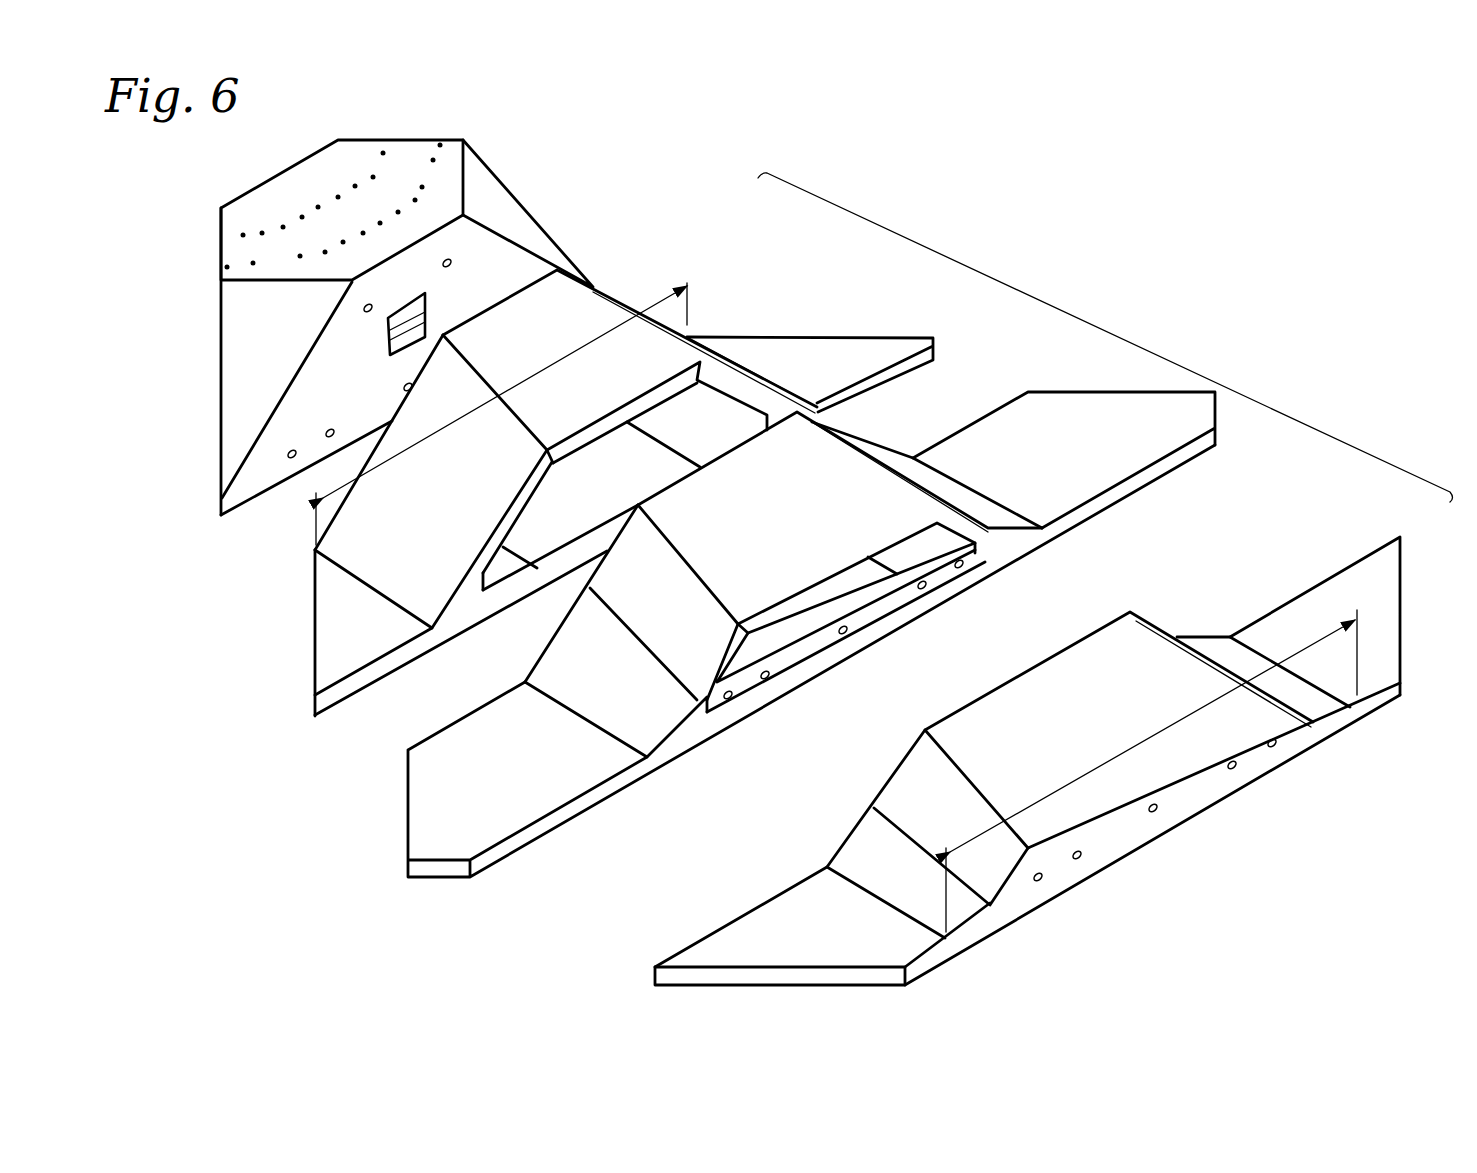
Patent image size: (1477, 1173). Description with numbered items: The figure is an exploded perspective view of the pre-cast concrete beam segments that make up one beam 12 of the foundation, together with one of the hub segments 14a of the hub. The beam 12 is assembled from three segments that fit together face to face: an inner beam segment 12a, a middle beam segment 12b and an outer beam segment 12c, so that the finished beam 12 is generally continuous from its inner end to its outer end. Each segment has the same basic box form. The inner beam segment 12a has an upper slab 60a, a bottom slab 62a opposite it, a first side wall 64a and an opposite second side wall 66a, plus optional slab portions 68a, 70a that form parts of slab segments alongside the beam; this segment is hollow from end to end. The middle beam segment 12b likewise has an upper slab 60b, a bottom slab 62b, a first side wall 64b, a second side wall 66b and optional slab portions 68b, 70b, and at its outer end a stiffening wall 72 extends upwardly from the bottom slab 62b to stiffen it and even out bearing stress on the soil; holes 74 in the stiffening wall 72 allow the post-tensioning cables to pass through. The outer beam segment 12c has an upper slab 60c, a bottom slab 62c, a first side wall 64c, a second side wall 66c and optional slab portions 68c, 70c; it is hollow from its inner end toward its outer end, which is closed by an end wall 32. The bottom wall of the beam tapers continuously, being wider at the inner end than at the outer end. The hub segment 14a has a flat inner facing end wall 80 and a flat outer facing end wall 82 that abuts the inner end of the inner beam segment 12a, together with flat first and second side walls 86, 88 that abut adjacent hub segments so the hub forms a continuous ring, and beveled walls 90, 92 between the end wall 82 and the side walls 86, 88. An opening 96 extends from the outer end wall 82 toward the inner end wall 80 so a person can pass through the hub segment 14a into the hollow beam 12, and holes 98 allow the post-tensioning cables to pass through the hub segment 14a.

The concrete beam 12 is at (1103, 327).
The inner beam segment 12a is at (728, 280).
The middle beam segment 12b is at (991, 388).
The outer beam segment 12c is at (1300, 542).
The hub segment 14a is at (352, 124).
The end wall 32 is at (1200, 787).
The upper slab of inner beam segment 60a is at (588, 300).
The upper slab of middle beam segment 60b is at (840, 473).
The upper slab of outer beam segment 60c is at (1097, 663).
The bottom slab of inner beam segment 62a is at (565, 568).
The bottom slab of middle beam segment 62b is at (810, 662).
The bottom slab of outer beam segment 62c is at (1112, 863).
The first side wall of inner beam segment 64a is at (348, 555).
The first side wall of middle beam segment 64b is at (695, 655).
The first side wall of outer beam segment 64c is at (885, 852).
The second side wall of inner beam segment 66a is at (722, 362).
The second side wall of middle beam segment 66b is at (967, 525).
The second side wall of outer beam segment 66c is at (1208, 643).
The slab portion of inner beam segment 68a is at (347, 663).
The slab portion of middle beam segment 68b is at (437, 813).
The slab portion of outer beam segment 68c is at (750, 947).
The slab portion of inner beam segment 70a is at (830, 352).
The slab portion of middle beam segment 70b is at (1070, 407).
The slab portion of outer beam segment 70c is at (1380, 652).
The stiffening wall 72 is at (812, 680).
The holes 74 is at (923, 592).
The inner facing end wall 80 is at (240, 205).
The outer facing end wall 82 is at (275, 470).
The first side wall 86 is at (221, 262).
The second side wall 88 is at (400, 140).
The beveled wall 90 is at (245, 348).
The beveled wall 92 is at (490, 195).
The opening 96 is at (398, 340).
The holes 98 is at (366, 311).